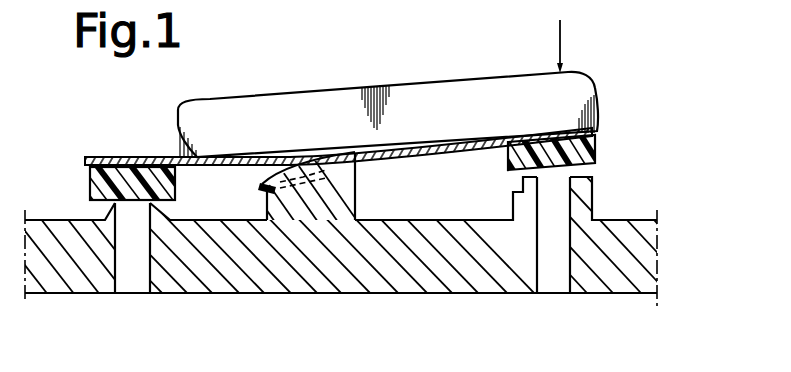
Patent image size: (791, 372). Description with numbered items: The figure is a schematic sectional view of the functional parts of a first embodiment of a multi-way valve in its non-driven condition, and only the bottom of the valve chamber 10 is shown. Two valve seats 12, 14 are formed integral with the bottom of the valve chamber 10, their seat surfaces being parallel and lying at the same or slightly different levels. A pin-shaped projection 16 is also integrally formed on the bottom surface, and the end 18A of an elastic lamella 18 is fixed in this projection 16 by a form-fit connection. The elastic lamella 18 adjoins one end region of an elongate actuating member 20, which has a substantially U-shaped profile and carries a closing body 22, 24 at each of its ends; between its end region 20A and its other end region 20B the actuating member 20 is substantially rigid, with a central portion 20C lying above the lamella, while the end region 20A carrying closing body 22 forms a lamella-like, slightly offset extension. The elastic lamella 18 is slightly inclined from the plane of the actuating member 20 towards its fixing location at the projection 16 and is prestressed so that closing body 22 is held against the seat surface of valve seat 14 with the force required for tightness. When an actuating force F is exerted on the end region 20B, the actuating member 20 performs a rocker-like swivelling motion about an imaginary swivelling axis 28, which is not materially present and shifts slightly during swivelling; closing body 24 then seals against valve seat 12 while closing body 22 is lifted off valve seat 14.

The valve chamber 10 is at (625, 278).
The valve seat 12 is at (570, 186).
The valve seat 14 is at (107, 218).
The pin-shaped projection 16 is at (333, 157).
The elastic lamella 18 is at (418, 160).
The end of elastic lamella 18A is at (265, 185).
The actuating member 20 is at (364, 88).
The end region of actuating member 20A is at (105, 157).
The end region of actuating member 20B is at (596, 94).
The cover central portion 20C is at (231, 117).
The closing body 22 is at (100, 183).
The closing body 24 is at (596, 148).
The imaginary swivelling axis 28 is at (442, 170).
The actuating force F is at (560, 20).